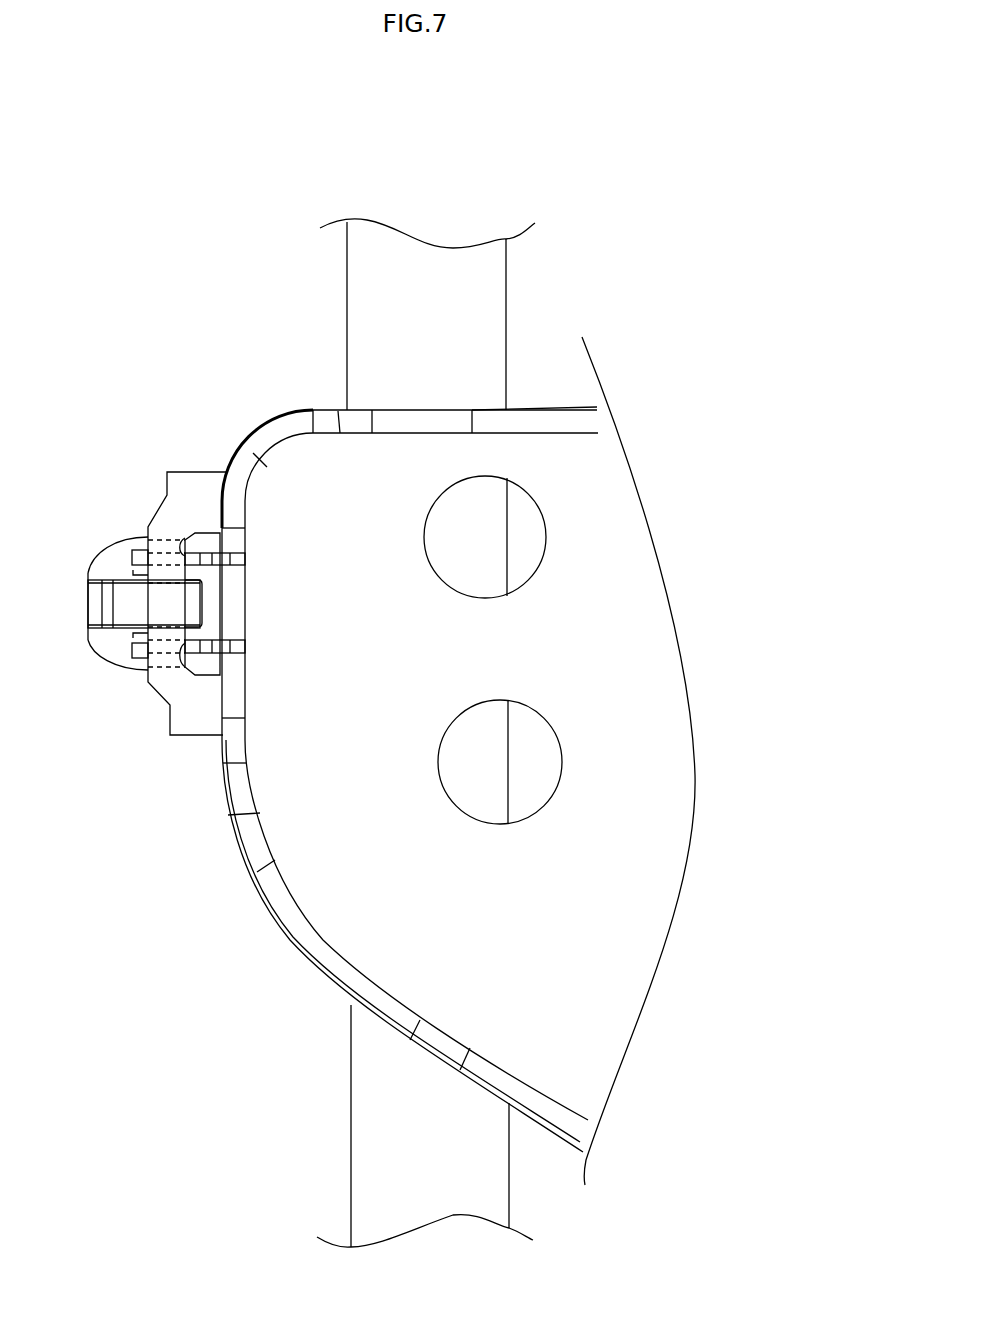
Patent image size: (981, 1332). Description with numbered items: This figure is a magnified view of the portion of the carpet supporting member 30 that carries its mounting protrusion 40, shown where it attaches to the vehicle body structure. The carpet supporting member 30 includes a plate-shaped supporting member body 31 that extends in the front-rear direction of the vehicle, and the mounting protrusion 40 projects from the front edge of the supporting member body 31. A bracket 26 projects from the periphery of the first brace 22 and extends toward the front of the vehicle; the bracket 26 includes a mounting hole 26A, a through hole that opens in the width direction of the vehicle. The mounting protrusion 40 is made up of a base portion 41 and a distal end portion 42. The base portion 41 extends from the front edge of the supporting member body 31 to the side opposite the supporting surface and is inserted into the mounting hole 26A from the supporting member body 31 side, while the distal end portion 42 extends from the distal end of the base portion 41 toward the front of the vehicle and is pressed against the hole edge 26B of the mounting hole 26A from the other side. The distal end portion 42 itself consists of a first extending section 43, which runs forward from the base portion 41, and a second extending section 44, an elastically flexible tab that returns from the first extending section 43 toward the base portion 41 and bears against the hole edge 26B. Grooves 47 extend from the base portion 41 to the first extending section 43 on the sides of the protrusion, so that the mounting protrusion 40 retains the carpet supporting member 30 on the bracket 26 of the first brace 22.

The first brace 22 is at (426, 265).
The bracket 26 is at (213, 480).
The mounting hole 26A is at (194, 533).
The hole edge 26B is at (163, 600).
The carpet supporting member 30 is at (538, 392).
The supporting member body 31 is at (350, 927).
The mounting protrusion 40 is at (173, 792).
The base portion 41 is at (218, 620).
The distal end portion 42 is at (121, 668).
The first extending section 43 is at (98, 638).
The second extending section 44 is at (128, 612).
The grooves 47 is at (140, 553).